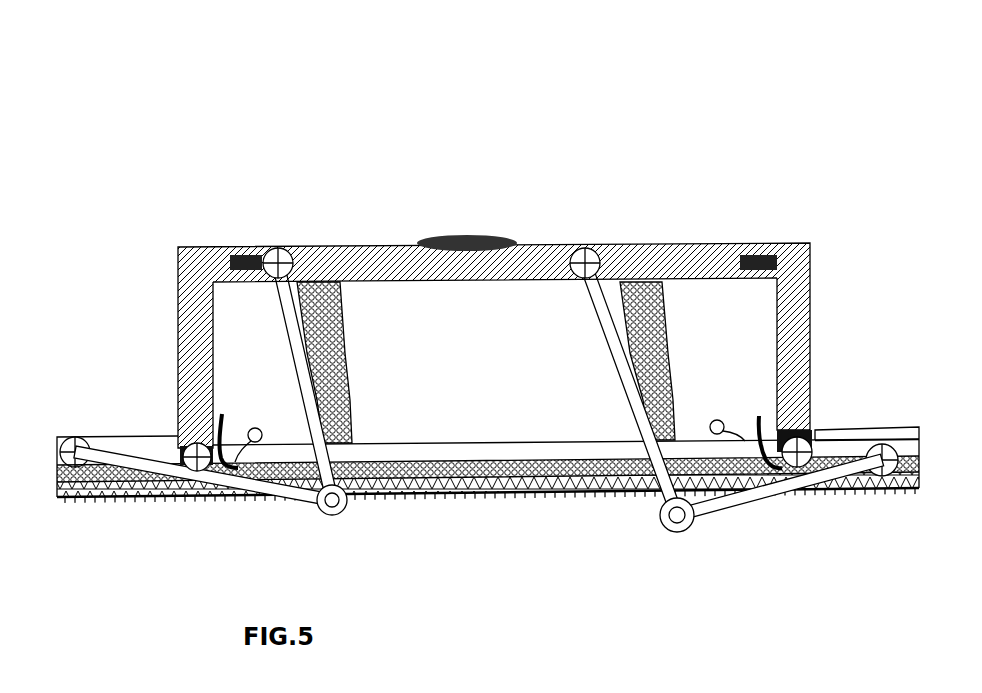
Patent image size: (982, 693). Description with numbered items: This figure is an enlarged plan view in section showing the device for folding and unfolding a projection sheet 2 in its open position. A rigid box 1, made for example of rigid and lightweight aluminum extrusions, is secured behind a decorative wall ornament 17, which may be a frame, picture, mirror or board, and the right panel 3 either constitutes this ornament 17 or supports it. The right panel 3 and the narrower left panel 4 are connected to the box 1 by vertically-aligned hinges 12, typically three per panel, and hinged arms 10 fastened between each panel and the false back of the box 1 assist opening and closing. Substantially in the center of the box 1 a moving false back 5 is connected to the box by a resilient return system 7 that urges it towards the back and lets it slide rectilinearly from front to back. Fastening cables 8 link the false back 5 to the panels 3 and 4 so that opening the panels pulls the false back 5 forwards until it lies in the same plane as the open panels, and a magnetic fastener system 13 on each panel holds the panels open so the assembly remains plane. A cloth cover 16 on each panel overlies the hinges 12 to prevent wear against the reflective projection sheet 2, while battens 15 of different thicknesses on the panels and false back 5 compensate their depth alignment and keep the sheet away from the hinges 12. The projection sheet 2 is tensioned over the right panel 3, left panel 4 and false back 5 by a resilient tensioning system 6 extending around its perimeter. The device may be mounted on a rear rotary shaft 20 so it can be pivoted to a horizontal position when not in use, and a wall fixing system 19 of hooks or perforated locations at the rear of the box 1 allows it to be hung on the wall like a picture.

The rigid box 1 is at (397, 261).
The projection sheet 2 is at (538, 498).
The right panel 3 is at (835, 447).
The left panel 4 is at (142, 424).
The false back 5 is at (538, 441).
The resilient tensioning system 6 is at (342, 513).
The resilient return system 7 is at (627, 320).
The fastening cables 8 is at (248, 420).
The hinged arms 10 is at (161, 476).
The hinges 12 is at (196, 436).
The magnetic fastener system 13 is at (176, 440).
The battens 15 is at (450, 470).
The cloth cover 16 is at (230, 409).
The decorative wall ornament 17 is at (897, 405).
The wall fixing system 19 is at (245, 249).
The rear rotary shaft 20 is at (498, 232).